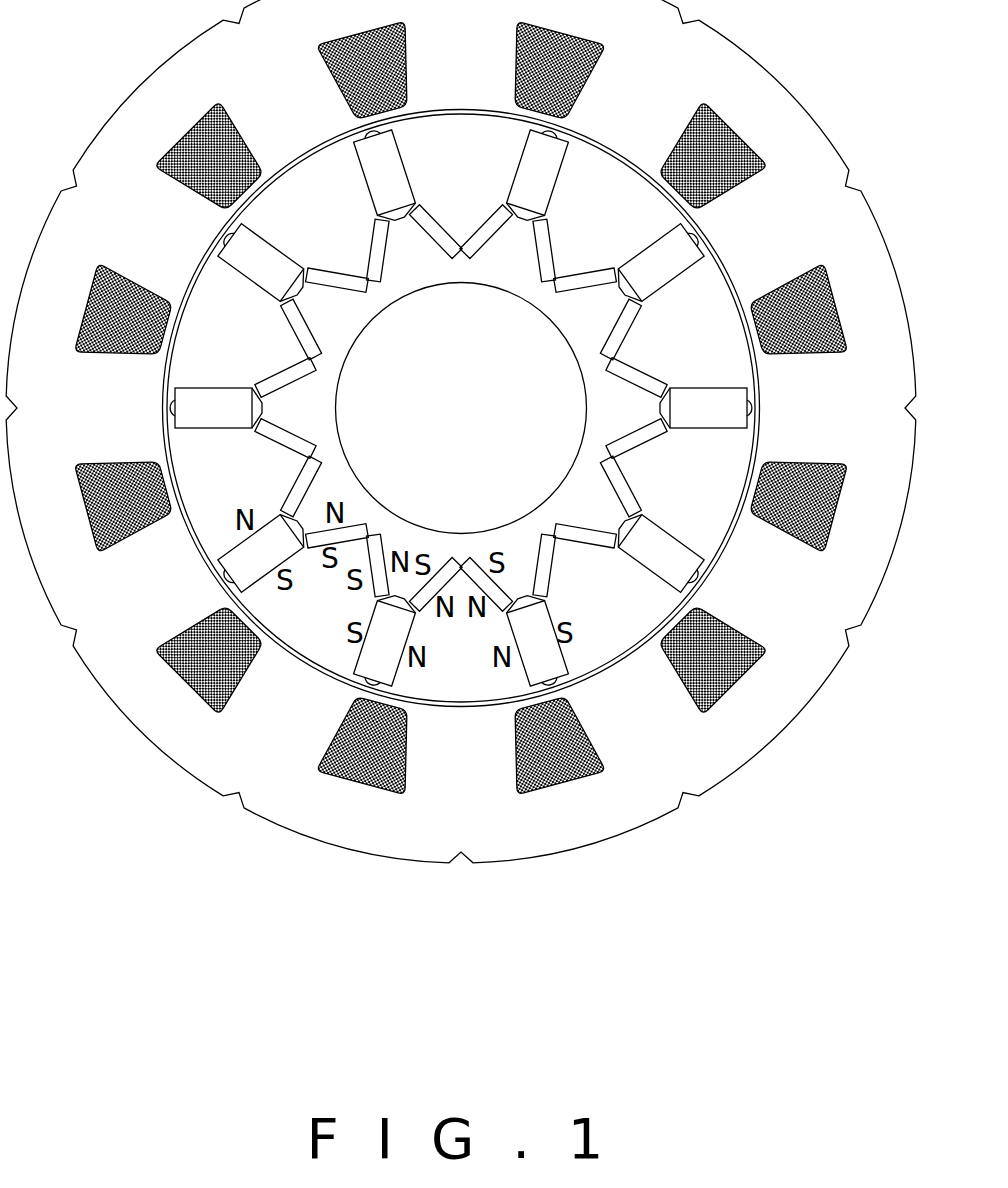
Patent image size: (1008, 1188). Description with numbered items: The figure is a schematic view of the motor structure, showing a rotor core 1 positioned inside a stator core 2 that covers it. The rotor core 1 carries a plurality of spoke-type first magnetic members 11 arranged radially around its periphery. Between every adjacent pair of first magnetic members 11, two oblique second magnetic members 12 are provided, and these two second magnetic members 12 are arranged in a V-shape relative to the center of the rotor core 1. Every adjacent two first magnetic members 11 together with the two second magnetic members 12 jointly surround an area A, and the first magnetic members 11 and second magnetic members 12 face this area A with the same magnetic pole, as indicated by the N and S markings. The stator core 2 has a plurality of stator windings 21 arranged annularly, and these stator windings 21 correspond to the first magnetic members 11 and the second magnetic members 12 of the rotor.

The rotor core 1 is at (372, 592).
The first magnetic member 11 is at (378, 662).
The second magnetic member 12 is at (425, 600).
The stator core 2 is at (687, 762).
The stator winding 21 is at (740, 678).
The area A is at (462, 672).